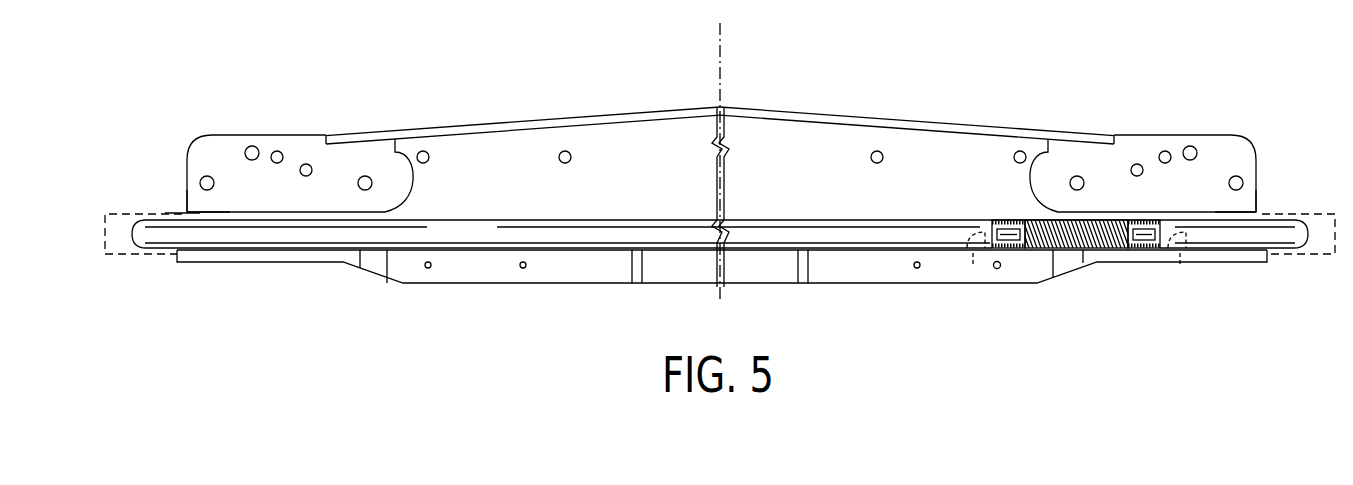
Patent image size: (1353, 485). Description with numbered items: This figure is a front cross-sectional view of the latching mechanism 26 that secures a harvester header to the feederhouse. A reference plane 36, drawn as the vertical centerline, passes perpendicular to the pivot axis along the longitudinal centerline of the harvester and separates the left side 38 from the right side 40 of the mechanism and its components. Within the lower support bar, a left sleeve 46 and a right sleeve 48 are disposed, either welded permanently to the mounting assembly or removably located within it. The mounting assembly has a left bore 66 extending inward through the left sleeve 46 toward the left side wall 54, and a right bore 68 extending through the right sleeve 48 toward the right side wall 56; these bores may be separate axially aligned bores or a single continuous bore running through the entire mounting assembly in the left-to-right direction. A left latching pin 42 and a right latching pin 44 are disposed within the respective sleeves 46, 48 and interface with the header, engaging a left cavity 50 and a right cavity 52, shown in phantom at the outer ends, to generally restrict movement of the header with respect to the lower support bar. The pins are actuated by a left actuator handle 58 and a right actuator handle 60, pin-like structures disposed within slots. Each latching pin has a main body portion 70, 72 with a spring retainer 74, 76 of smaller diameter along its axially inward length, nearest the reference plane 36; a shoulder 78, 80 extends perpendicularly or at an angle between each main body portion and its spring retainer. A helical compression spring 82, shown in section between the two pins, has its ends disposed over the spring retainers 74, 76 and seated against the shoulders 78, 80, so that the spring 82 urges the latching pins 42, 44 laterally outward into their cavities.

The latching mechanism 26 is at (148, 185).
The reference plane 36 is at (724, 80).
The left side 38 is at (947, 105).
The right side 40 is at (543, 105).
The left latching pin 42 is at (1298, 240).
The right latching pin 44 is at (158, 237).
The left sleeve 46 is at (1262, 213).
The right sleeve 48 is at (180, 213).
The left cavity 50 is at (1317, 207).
The right cavity 52 is at (113, 207).
The left side wall 54 is at (1260, 165).
The right side wall 56 is at (186, 178).
The left actuator handle 58 is at (1177, 263).
The right actuator handle 60 is at (968, 273).
The left bore 66 is at (1047, 253).
The right bore 68 is at (243, 249).
The main body portion 70 is at (1243, 237).
The main body portion 72 is at (463, 237).
The spring retainer 74 is at (1135, 225).
The spring retainer 76 is at (1005, 225).
The shoulder 78 is at (1153, 240).
The shoulder 80 is at (1007, 240).
The helical compression spring 82 is at (1062, 220).